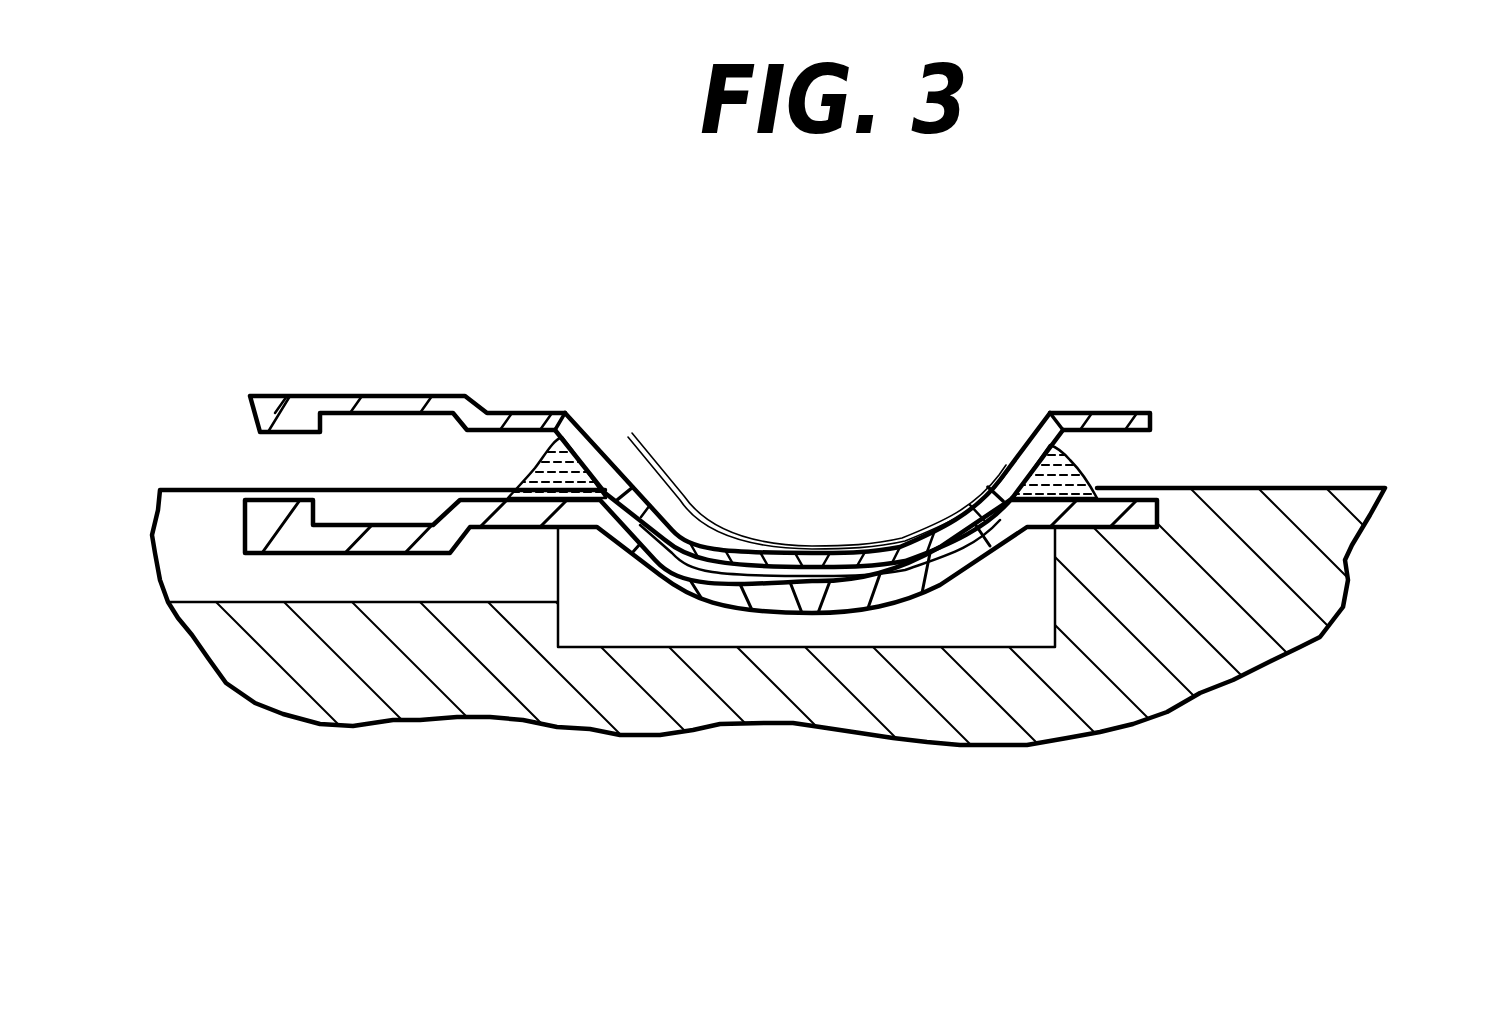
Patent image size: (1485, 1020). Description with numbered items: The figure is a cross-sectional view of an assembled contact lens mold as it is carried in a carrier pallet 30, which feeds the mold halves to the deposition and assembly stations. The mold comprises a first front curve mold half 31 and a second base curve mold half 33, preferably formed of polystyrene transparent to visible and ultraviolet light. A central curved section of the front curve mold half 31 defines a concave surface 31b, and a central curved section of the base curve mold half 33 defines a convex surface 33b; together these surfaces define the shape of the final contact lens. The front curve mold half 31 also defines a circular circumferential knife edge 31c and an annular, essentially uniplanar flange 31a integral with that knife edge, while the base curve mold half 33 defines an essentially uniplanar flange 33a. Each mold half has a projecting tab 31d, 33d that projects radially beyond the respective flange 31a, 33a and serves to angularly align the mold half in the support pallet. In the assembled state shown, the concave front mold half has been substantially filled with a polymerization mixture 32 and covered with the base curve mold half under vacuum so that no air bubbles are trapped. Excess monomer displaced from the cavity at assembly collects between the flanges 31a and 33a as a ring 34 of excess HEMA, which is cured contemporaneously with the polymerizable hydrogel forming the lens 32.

The carrier pallet 30 is at (1280, 590).
The front curve mold half 31 is at (862, 612).
The annular flange 31a is at (517, 527).
The concave surface 31b is at (697, 594).
The circumferential knife edge 31c is at (604, 520).
The projecting tab 31d is at (363, 527).
The polymerization mixture 32 is at (795, 578).
The base curve mold half 33 is at (648, 535).
The uniplanar flange 33a is at (498, 413).
The convex surface 33b is at (682, 560).
The projecting tab 33d is at (400, 397).
The ring of excess HEMA 34 is at (560, 417).